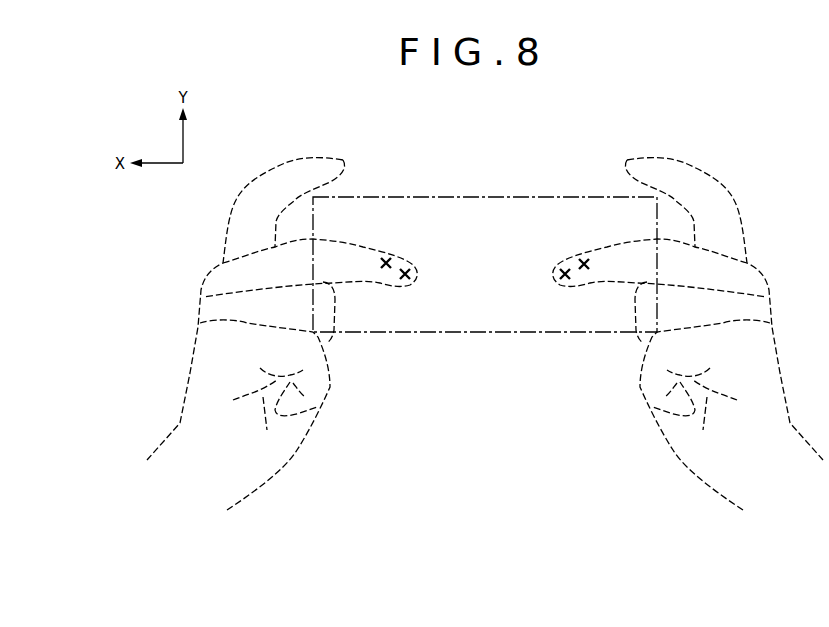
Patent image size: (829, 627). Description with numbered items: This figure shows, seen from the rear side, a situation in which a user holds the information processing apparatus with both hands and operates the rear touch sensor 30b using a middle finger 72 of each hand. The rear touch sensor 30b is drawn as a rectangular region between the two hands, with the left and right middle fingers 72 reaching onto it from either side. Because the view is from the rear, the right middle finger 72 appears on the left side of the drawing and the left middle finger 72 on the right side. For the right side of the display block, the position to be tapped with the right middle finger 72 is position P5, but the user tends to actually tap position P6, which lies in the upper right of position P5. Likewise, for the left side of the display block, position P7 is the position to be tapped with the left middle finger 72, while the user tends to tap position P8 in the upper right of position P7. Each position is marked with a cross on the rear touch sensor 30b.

The middle finger 72 is at (358, 257).
The rear touch sensor 30b is at (483, 332).
The position P5 is at (405, 272).
The position P6 is at (386, 261).
The position P7 is at (565, 272).
The position P8 is at (584, 262).